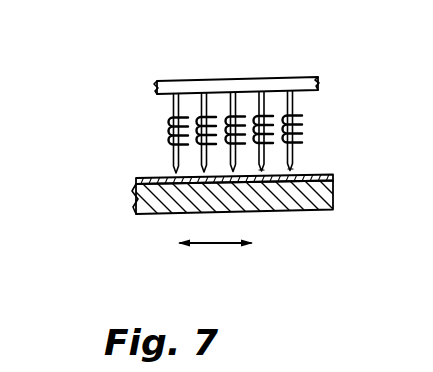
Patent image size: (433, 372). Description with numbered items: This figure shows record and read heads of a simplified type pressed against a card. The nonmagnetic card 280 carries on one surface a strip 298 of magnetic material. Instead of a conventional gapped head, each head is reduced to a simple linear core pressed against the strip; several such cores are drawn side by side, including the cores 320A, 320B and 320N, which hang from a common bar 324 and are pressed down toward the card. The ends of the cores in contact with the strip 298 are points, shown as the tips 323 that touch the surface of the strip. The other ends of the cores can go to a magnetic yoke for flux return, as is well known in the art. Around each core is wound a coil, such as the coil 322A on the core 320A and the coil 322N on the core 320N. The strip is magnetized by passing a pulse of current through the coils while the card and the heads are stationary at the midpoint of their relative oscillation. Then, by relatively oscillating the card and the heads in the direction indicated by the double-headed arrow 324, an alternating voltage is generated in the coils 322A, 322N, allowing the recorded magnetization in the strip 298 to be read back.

The linear core 320N is at (180, 104).
The linear core 320B is at (256, 95).
The linear core 320A is at (294, 94).
The support bar / direction of movement 324 is at (321, 80).
The coil 322N is at (167, 132).
The coil 322A is at (303, 122).
The strip of magnetic material 298 is at (148, 178).
The nonmagnetic card 280 is at (134, 193).
The pin tips 323 is at (264, 178).